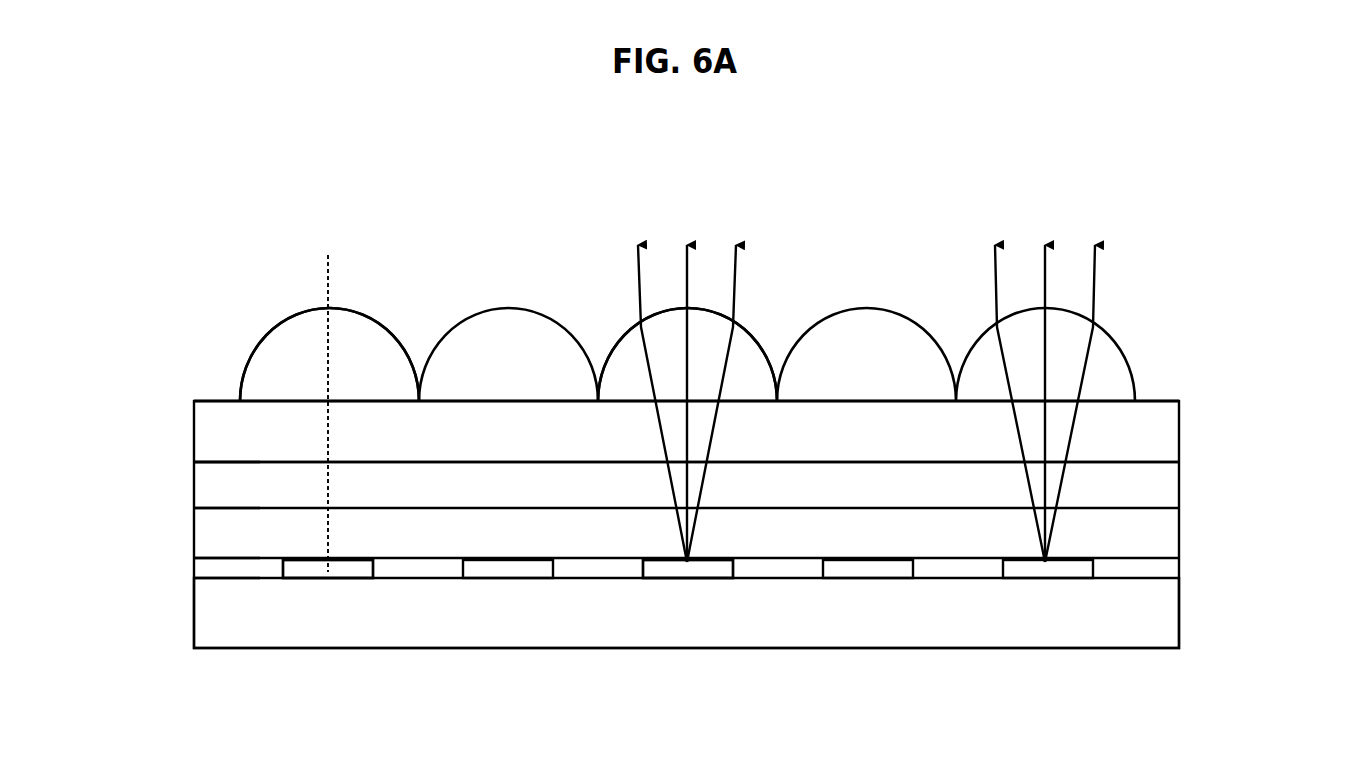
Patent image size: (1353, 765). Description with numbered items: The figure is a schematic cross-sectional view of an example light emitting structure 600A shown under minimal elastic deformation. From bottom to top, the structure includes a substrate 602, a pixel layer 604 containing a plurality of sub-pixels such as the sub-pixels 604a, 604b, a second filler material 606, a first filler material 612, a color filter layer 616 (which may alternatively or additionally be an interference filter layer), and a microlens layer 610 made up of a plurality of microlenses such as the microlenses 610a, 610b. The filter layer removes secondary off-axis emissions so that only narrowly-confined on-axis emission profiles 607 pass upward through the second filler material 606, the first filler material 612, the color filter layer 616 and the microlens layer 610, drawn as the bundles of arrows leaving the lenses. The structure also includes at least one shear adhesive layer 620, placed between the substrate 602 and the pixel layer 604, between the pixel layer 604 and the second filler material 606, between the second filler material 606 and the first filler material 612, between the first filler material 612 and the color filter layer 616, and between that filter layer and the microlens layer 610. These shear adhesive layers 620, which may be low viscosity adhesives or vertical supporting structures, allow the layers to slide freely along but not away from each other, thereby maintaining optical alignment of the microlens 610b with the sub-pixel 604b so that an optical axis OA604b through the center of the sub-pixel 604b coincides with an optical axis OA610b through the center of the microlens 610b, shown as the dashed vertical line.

The light emitting structure 600A is at (197, 310).
The substrate 602 is at (1150, 608).
The pixel layer 604 is at (955, 568).
The sub-pixel 604a is at (687, 568).
The sub-pixel 604b is at (360, 568).
The second filler material 606 is at (1147, 546).
The narrowly-confined on-axis emission profiles 607 is at (763, 235).
The microlens layer 610 is at (848, 370).
The microlens 610a is at (620, 370).
The microlens 610b is at (263, 357).
The first filler material 612 is at (1147, 488).
The color filter layer 616 is at (1147, 434).
The shear adhesive layer 620 is at (240, 465).
The optical axis of microlens OA610b is at (333, 272).
The optical axis of sub-pixel OA604b is at (328, 428).